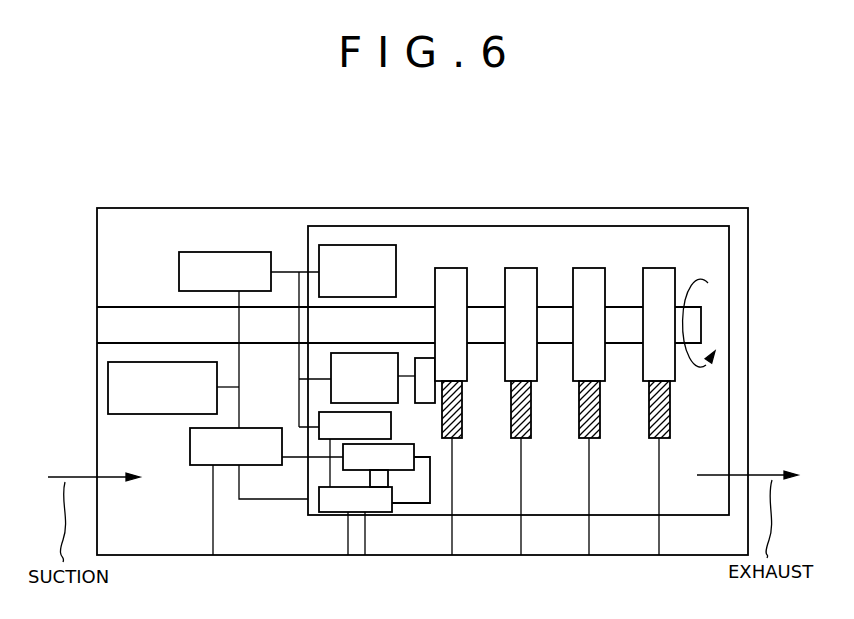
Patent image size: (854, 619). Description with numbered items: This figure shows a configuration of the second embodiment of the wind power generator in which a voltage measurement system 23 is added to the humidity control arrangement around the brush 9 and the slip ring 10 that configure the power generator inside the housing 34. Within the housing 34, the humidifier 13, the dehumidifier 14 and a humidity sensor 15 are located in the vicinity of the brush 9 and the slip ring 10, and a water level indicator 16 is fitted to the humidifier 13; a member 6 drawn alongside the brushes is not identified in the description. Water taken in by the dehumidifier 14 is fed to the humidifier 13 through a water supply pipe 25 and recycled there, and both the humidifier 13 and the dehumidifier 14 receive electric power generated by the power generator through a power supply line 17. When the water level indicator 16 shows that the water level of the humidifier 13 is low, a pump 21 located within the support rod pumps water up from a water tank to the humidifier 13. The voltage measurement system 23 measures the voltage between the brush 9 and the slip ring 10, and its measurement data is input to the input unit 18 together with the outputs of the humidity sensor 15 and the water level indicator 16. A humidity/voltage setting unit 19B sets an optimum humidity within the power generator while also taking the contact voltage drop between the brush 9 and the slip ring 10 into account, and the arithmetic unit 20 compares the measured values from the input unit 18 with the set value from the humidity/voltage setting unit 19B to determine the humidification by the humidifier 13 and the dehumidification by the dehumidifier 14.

The intake manifold 6 is at (134, 307).
The brush 9 is at (670, 410).
The slip ring 10 is at (661, 268).
The humidifier 13 is at (332, 498).
The dehumidifier 14 is at (414, 460).
The humidity sensor 15 is at (357, 245).
The water level indicator 16 is at (391, 432).
The power supply line 17 is at (430, 488).
The input unit 18 is at (224, 252).
The humidity/voltage setting unit 19B is at (108, 386).
The arithmetic unit 20 is at (198, 465).
The pump 21 is at (356, 548).
The voltage measurement system 23 is at (331, 390).
The water supply pipe 25 is at (388, 478).
The housing 34 is at (729, 262).